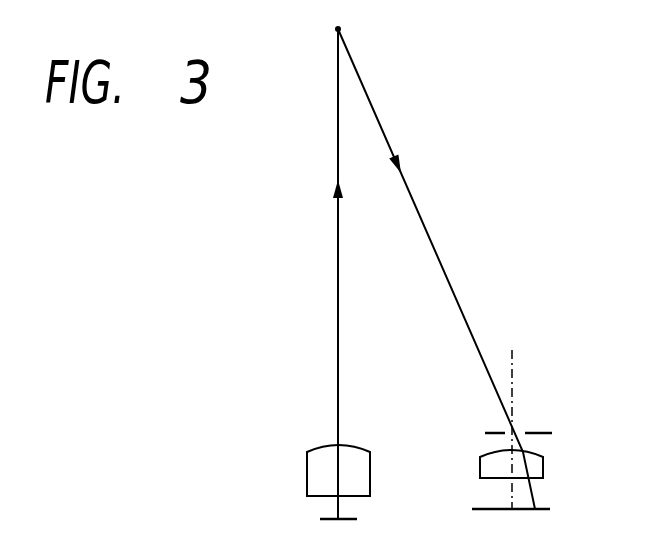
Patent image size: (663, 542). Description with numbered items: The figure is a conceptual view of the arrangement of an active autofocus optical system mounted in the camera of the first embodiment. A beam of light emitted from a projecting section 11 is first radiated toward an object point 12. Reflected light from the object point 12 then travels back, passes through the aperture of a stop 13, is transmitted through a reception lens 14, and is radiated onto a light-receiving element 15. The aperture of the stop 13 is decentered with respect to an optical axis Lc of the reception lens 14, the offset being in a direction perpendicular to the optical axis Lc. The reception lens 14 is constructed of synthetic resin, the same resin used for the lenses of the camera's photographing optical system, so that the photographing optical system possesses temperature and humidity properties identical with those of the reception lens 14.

The projecting section 11 is at (285, 432).
The object point 12 is at (341, 29).
The stop 13 is at (547, 420).
The reception lens 14 is at (543, 466).
The light-receiving element 15 is at (544, 506).
The optical axis Lc is at (512, 356).